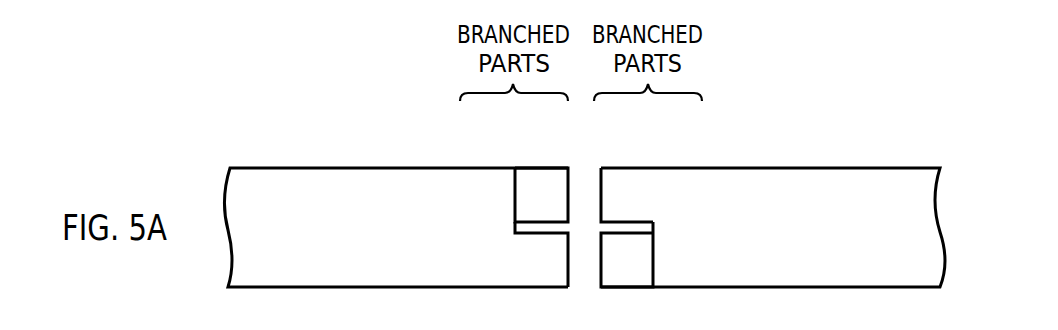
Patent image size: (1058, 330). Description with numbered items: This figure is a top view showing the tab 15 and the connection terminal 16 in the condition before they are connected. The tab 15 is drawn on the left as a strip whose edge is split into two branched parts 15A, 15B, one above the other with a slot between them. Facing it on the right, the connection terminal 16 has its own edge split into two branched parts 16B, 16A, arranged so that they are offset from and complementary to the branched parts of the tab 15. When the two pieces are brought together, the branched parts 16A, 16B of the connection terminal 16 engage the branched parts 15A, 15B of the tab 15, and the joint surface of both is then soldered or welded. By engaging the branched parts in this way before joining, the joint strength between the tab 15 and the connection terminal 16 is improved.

The tab 15 is at (382, 183).
The branched part of the tab 15A is at (533, 252).
The branched part of the tab 15B is at (543, 182).
The connection terminal 16 is at (753, 183).
The branched part of the connection terminal 16A is at (638, 247).
The branched part of the connection terminal 16B is at (620, 183).